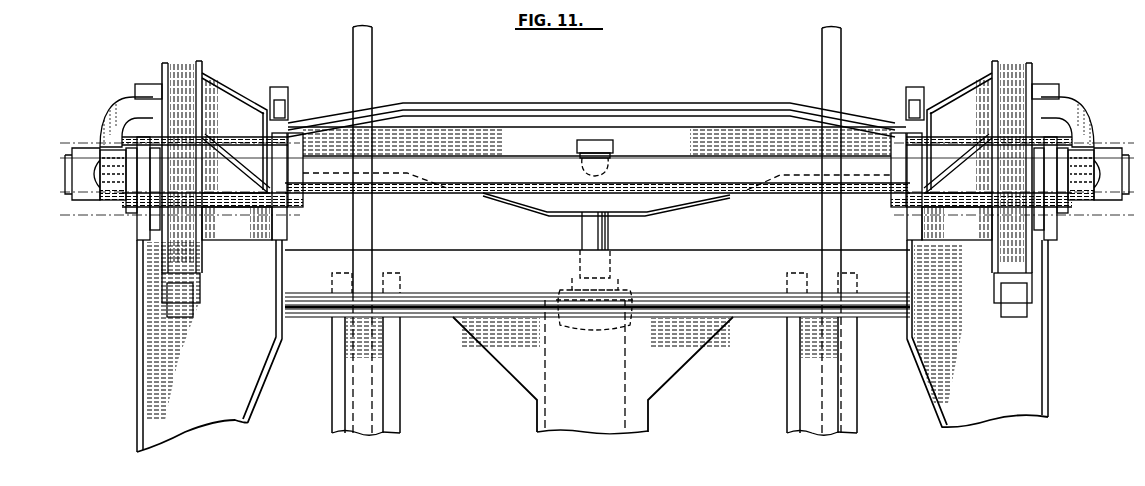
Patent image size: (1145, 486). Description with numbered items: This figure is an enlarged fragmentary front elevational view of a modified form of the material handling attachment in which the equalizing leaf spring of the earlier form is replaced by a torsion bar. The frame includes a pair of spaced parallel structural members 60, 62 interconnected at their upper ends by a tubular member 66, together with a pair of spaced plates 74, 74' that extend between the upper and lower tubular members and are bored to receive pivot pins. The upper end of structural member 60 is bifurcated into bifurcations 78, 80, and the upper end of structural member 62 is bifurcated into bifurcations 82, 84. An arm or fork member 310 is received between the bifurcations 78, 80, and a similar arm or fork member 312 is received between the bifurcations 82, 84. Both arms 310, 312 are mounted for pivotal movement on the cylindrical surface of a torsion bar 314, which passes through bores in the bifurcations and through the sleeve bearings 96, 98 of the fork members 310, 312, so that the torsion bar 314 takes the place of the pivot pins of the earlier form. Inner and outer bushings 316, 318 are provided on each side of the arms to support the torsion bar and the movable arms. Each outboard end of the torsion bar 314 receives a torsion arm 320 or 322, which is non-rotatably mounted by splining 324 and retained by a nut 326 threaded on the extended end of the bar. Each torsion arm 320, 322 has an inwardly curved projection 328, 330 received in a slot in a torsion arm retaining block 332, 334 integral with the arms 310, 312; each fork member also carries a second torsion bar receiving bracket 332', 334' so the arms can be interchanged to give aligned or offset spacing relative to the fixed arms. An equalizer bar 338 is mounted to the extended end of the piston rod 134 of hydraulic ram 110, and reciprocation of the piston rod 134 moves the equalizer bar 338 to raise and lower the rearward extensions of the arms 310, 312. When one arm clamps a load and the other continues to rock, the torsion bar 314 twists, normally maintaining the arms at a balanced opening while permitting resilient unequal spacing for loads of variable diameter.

The structural member 60 is at (1052, 370).
The structural member 62 is at (137, 358).
The tubular member 66 is at (497, 268).
The plate 74 is at (559, 354).
The plate 74' is at (841, 354).
The bifurcation 78 is at (1052, 228).
The bifurcation 80 is at (912, 228).
The bifurcation 82 is at (283, 218).
The bifurcation 84 is at (143, 228).
The sleeve bearing 96 is at (966, 195).
The sleeve bearing 98 is at (228, 182).
The hydraulic ram 110 is at (592, 417).
The piston rod 134 is at (610, 225).
The arm or fork member 310 is at (1017, 56).
The arm or fork member 312 is at (166, 50).
The torsion bar 314 is at (498, 170).
The inner bushing 316 is at (298, 150).
The outer bushing 318 is at (132, 211).
The torsion arm 320 is at (1075, 117).
The torsion arm 322 is at (112, 112).
The splining 324 is at (108, 162).
The nut 326 is at (75, 152).
The inwardly curved projection 328 is at (1052, 98).
The inwardly curved projection 330 is at (142, 93).
The torsion arm retaining block 332 is at (1025, 156).
The second torsion bar receiving bracket 332' is at (958, 128).
The torsion arm retaining block 334 is at (186, 153).
The second torsion bar receiving bracket 334' is at (236, 128).
The equalizer bar 338 is at (705, 135).